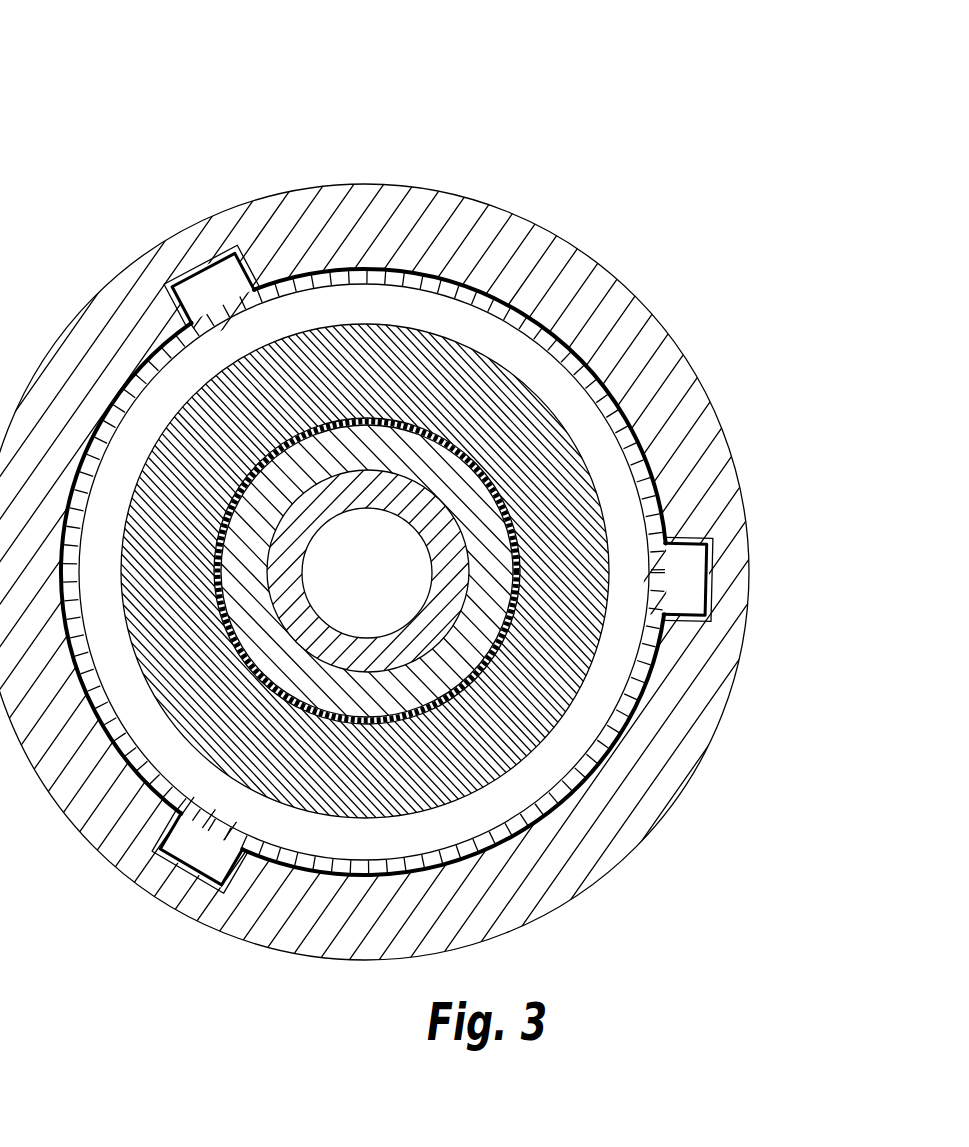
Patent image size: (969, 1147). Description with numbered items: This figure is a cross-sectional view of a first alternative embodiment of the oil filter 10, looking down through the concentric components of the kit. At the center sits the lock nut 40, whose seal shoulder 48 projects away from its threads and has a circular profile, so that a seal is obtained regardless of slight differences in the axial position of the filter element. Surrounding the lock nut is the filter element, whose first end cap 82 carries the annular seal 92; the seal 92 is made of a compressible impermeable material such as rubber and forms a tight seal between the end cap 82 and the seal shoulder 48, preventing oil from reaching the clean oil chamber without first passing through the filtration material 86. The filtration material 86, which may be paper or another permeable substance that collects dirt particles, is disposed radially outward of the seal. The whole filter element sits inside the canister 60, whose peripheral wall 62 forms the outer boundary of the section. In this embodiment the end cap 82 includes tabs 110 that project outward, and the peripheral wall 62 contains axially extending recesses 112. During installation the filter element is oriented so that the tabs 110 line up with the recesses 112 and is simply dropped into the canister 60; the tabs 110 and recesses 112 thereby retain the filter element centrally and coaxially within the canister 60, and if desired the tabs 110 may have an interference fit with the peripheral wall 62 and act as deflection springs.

The oil filter 10 is at (484, 573).
The lock nut 40 is at (474, 520).
The seal shoulder 48 is at (429, 576).
The canister 60 is at (484, 573).
The peripheral wall 62 is at (484, 573).
The first end cap 82 is at (453, 546).
The filtration material 86 is at (431, 573).
The seal 92 is at (510, 571).
The tabs 110 is at (459, 546).
The recesses 112 is at (452, 574).